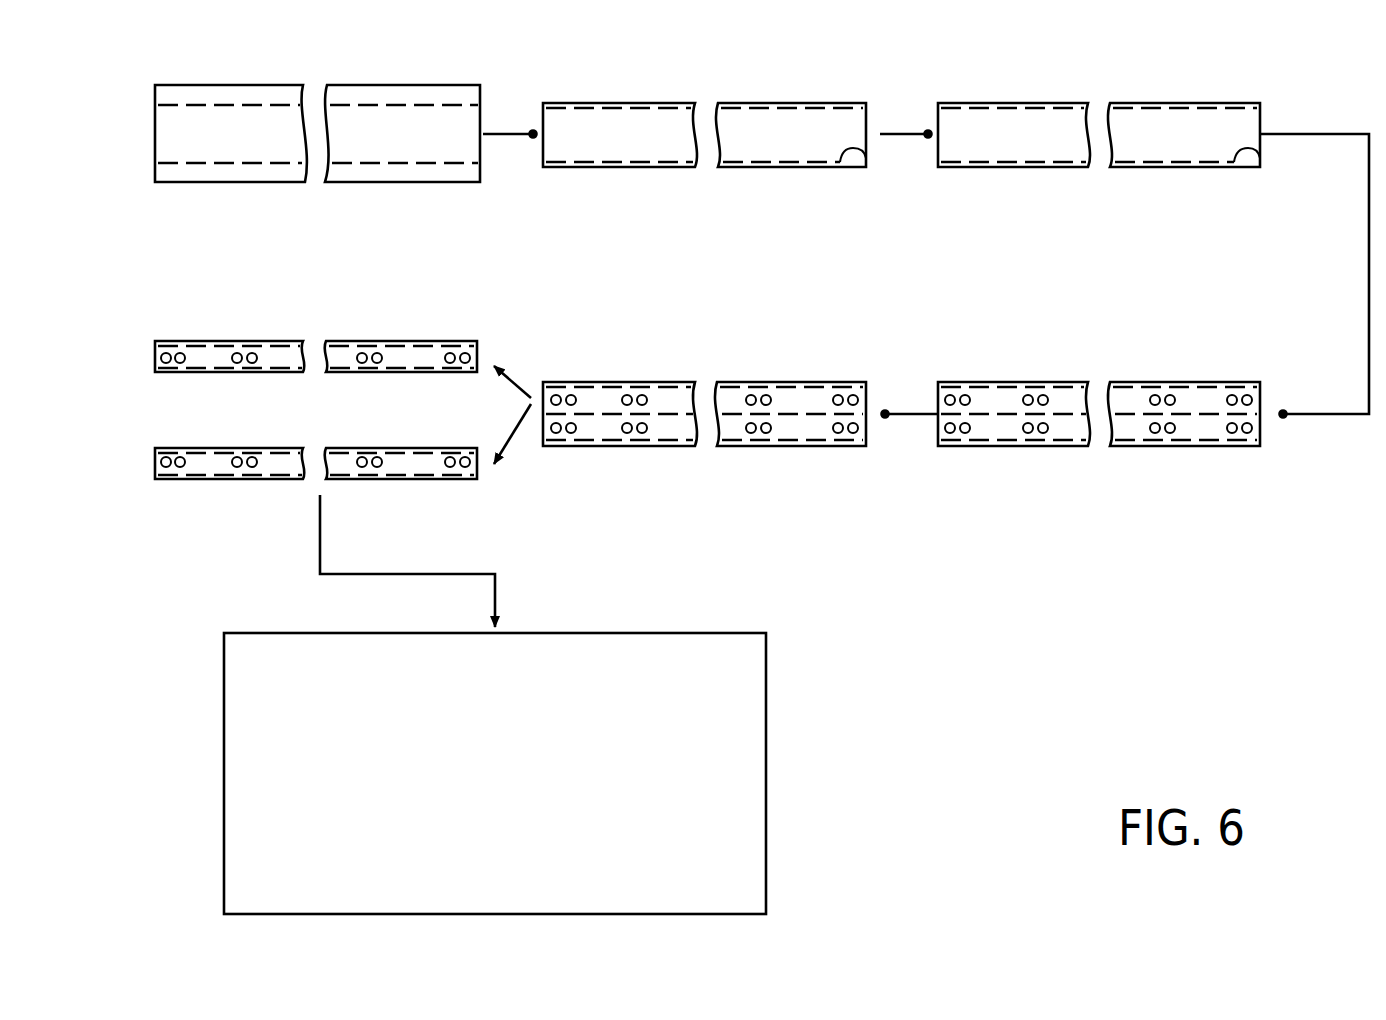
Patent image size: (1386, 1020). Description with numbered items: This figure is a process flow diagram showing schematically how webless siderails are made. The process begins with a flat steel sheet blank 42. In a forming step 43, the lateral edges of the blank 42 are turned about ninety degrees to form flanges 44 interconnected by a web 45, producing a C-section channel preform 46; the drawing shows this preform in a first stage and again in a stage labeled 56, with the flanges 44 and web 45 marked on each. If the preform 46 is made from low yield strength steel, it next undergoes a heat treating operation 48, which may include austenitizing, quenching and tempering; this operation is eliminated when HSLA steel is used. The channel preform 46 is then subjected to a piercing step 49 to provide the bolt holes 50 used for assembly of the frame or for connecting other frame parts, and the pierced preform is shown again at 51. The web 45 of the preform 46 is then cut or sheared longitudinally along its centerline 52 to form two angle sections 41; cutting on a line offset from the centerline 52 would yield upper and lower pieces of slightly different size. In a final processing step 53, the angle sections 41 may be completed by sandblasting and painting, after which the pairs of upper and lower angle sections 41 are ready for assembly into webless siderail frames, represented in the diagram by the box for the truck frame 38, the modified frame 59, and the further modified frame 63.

The truck frame 38 is at (543, 719).
The angle section 41 is at (347, 340).
The steel sheet blank 42 is at (166, 136).
The forming step 43 is at (566, 184).
The flange 44 is at (618, 102).
The web 45 is at (760, 118).
The C-section channel preform 46 is at (678, 181).
The heat treating operation 48 is at (1262, 79).
The piercing step 49 is at (1201, 383).
The bolt holes 50 is at (1171, 395).
The flange plate 51 is at (798, 378).
The centerline 52 is at (682, 414).
The final processing step 53 is at (146, 471).
The siderail section 56 is at (1003, 171).
The modified frame 59 is at (543, 719).
The further modified frame 63 is at (687, 619).